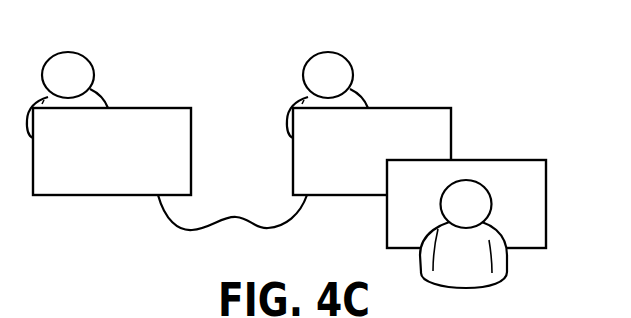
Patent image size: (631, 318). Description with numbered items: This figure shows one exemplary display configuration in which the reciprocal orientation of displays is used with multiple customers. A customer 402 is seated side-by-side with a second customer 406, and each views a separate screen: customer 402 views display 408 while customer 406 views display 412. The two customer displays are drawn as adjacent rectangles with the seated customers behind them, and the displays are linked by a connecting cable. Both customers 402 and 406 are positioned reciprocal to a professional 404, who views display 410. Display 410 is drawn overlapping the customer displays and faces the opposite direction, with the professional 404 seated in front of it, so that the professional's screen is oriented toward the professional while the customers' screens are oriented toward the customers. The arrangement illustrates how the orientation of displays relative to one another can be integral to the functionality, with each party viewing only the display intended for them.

The customer 402 is at (90, 60).
The professional 404 is at (507, 262).
The customer 406 is at (345, 53).
The display 408 is at (162, 108).
The display 410 is at (515, 160).
The display 412 is at (420, 108).